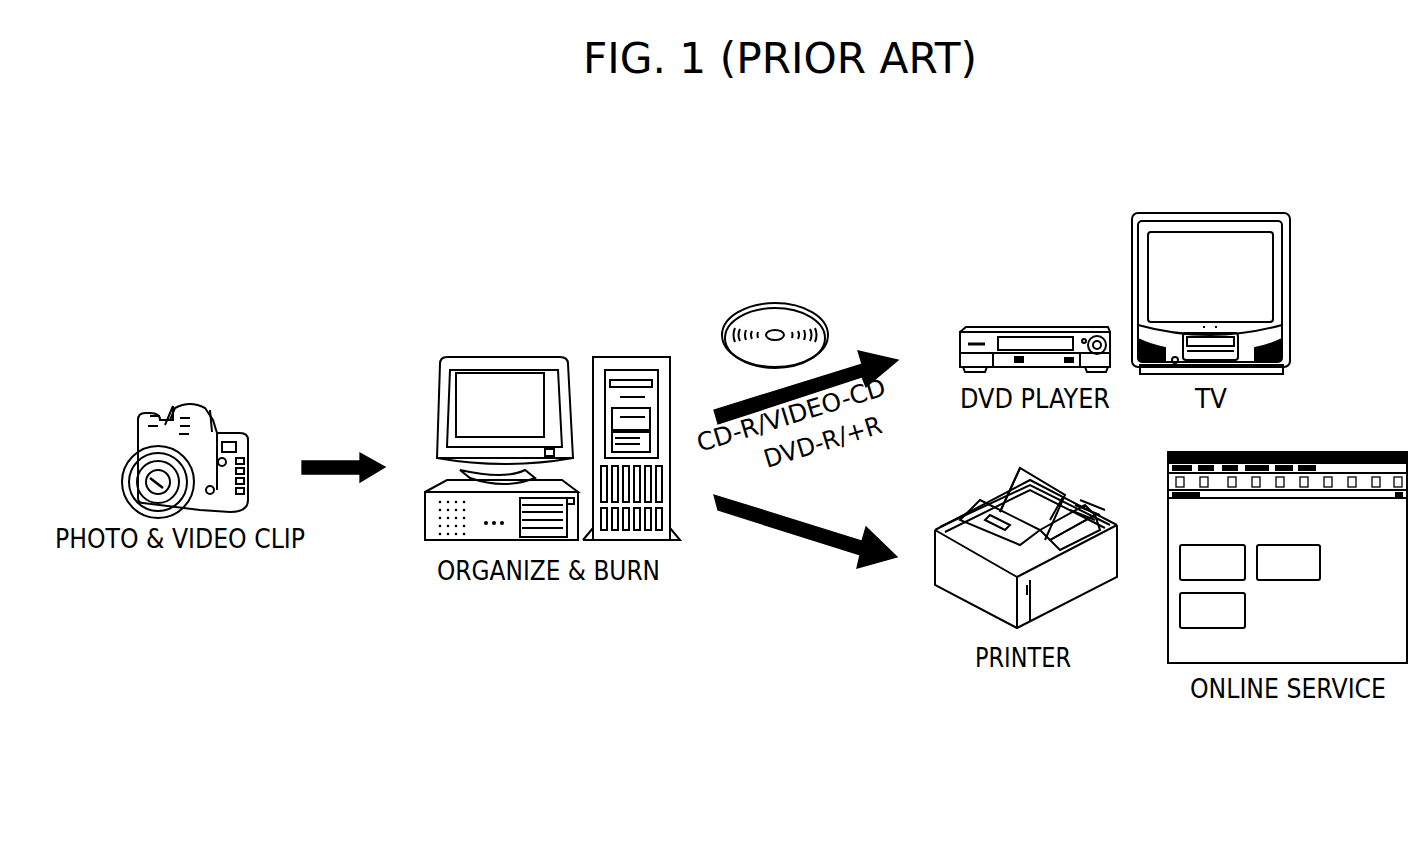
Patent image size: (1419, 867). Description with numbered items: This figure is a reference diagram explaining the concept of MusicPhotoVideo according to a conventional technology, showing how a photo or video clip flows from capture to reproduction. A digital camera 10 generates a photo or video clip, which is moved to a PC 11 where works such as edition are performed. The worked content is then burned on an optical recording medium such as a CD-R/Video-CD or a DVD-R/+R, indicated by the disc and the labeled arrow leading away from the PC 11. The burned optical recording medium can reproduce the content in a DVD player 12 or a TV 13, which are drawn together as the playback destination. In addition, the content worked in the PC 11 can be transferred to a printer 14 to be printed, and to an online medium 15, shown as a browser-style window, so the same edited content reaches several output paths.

The digital camera 10 is at (202, 403).
The PC 11 is at (505, 356).
The DVD player 12 is at (1038, 325).
The TV 13 is at (1213, 213).
The printer 14 is at (1055, 477).
The online medium 15 is at (1293, 452).